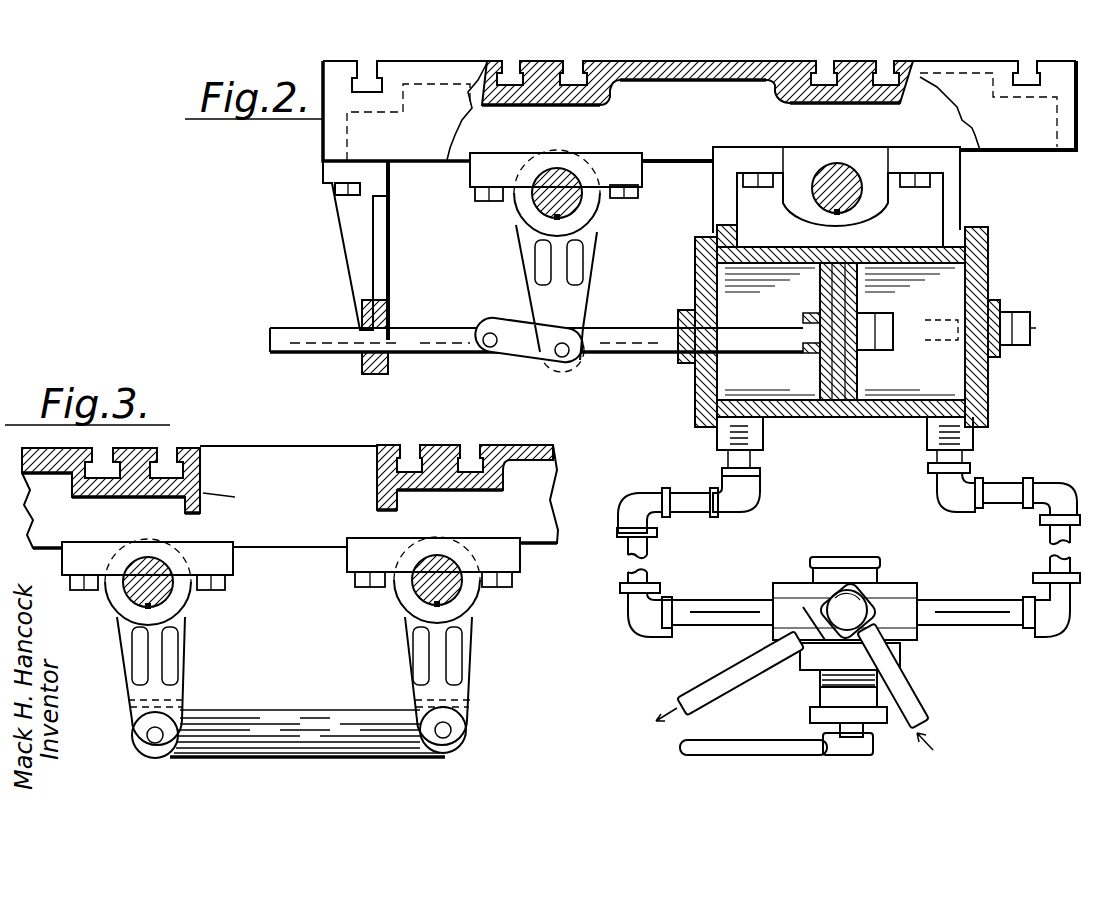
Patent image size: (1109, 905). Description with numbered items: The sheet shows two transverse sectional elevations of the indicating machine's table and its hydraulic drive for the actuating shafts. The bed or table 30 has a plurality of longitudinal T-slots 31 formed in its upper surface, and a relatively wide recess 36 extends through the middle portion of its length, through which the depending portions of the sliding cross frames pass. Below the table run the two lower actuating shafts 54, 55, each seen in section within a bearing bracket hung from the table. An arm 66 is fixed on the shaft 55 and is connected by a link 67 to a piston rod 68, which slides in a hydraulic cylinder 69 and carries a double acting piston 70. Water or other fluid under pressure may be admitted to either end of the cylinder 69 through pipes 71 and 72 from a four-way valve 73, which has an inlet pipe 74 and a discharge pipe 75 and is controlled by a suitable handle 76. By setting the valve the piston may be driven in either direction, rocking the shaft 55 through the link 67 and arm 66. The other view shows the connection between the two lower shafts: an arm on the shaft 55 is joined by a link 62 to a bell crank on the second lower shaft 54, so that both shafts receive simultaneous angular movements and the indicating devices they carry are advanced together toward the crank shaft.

In FIG. 2, the bed or table 30 is at (701, 64).
In FIG. 3, the bed or table 30 is at (278, 453).
In FIG. 2, the T-slots 31 is at (1026, 70).
In FIG. 3, the T-slots 31 is at (462, 460).
In FIG. 3, the recess 36 is at (235, 497).
In FIG. 2, the lower actuating shaft 54 is at (834, 182).
In FIG. 2, the lower actuating shaft 55 is at (553, 185).
In FIG. 3, the lower actuating shaft 55 is at (147, 570).
In FIG. 3, the link 62 is at (292, 713).
In FIG. 2, the arm 66 is at (536, 272).
In FIG. 2, the link 67 is at (520, 362).
In FIG. 2, the piston rod 68 is at (318, 330).
In FIG. 2, the hydraulic cylinder 69 is at (989, 266).
In FIG. 2, the double acting piston 70 is at (865, 381).
In FIG. 2, the pipe 71 is at (952, 498).
In FIG. 2, the pipe 72 is at (748, 495).
In FIG. 2, the four-way valve 73 is at (890, 592).
In FIG. 2, the inlet pipe 74 is at (913, 706).
In FIG. 2, the discharge pipe 75 is at (745, 668).
In FIG. 2, the handle 76 is at (745, 746).